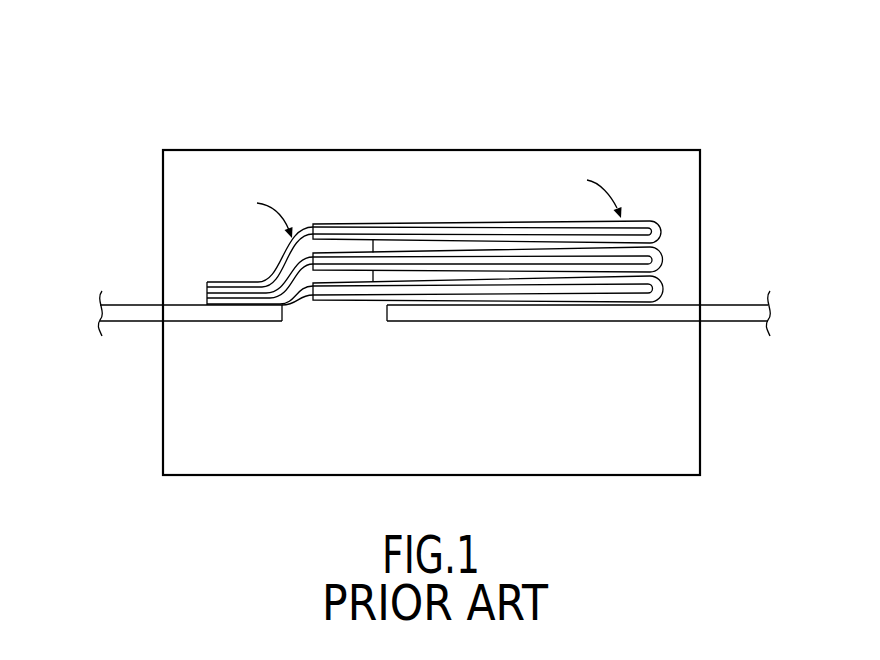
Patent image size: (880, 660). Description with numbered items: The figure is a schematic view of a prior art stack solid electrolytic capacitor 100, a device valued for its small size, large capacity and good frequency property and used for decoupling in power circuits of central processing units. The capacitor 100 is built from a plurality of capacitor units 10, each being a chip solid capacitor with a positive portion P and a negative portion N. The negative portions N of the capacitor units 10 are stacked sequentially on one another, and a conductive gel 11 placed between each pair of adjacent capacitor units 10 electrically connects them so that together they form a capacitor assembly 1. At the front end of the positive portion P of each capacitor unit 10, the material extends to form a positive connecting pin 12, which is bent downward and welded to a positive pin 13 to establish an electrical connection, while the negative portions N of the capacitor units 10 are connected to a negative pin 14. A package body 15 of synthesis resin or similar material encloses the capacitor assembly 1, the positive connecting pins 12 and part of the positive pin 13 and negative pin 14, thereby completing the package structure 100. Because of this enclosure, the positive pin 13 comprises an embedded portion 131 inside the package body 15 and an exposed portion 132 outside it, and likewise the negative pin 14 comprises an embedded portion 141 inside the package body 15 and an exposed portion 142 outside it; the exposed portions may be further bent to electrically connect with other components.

The stack solid electrolytic capacitor 100 is at (137, 52).
The capacitor assembly 1 is at (546, 238).
The capacitor unit 10 is at (670, 219).
The conductive gel 11 is at (415, 275).
The positive connecting pin 12 is at (237, 297).
The positive pin 13 is at (149, 355).
The embedded portion 131 is at (235, 313).
The exposed portion 132 is at (140, 313).
The negative pin 14 is at (617, 356).
The embedded portion 141 is at (628, 317).
The exposed portion 142 is at (723, 317).
The package body 15 is at (307, 170).